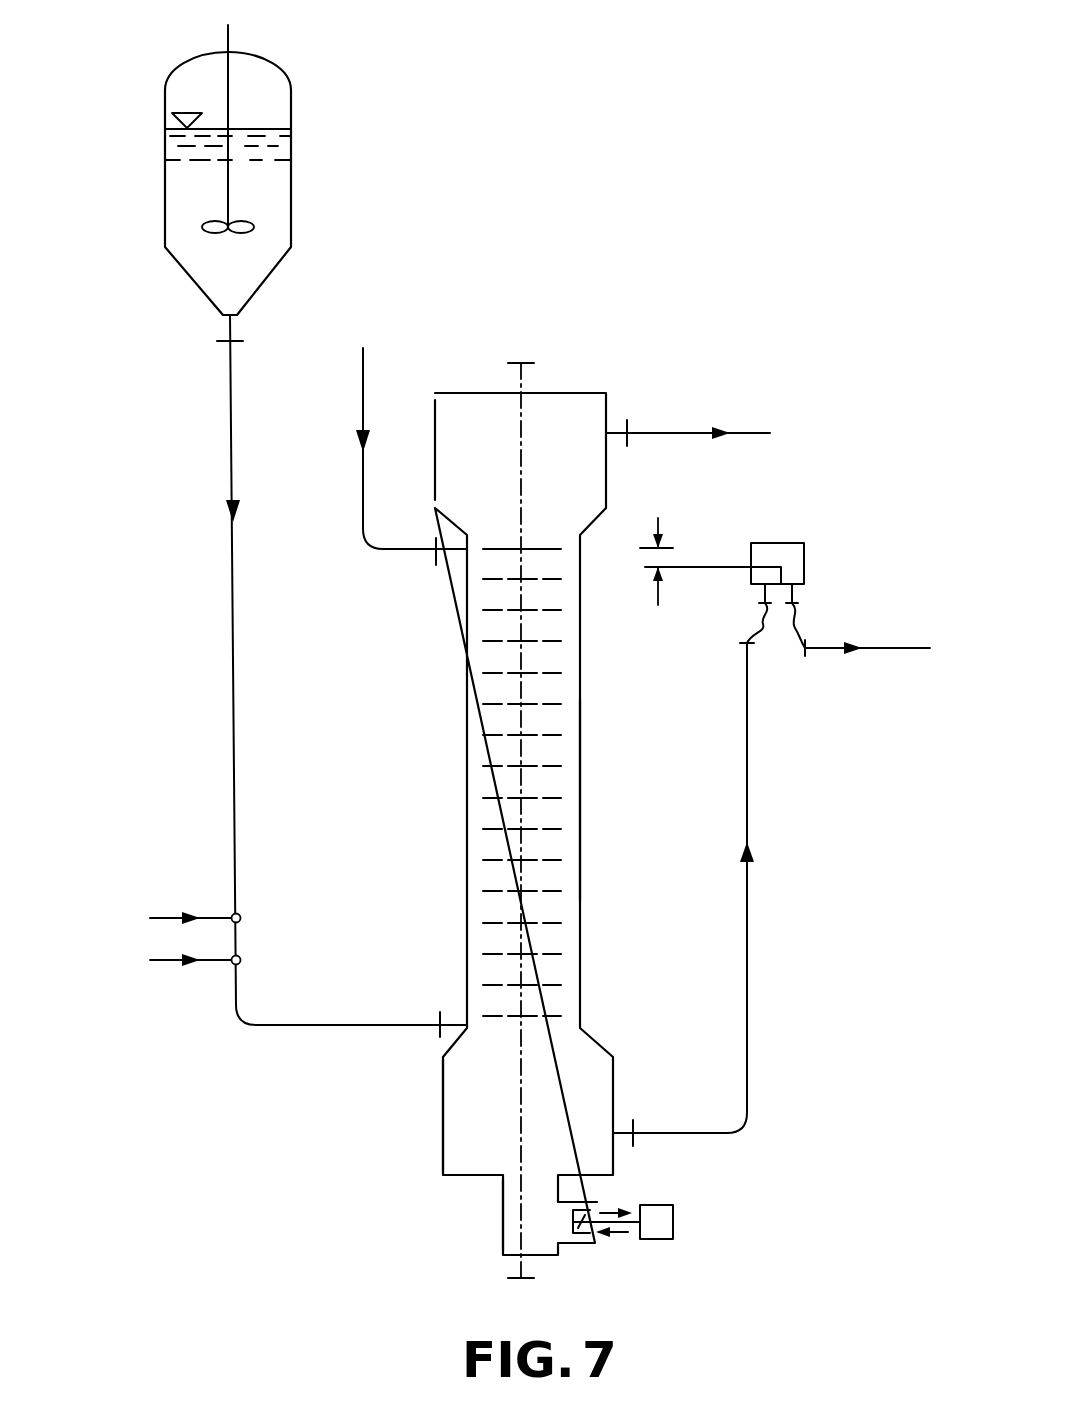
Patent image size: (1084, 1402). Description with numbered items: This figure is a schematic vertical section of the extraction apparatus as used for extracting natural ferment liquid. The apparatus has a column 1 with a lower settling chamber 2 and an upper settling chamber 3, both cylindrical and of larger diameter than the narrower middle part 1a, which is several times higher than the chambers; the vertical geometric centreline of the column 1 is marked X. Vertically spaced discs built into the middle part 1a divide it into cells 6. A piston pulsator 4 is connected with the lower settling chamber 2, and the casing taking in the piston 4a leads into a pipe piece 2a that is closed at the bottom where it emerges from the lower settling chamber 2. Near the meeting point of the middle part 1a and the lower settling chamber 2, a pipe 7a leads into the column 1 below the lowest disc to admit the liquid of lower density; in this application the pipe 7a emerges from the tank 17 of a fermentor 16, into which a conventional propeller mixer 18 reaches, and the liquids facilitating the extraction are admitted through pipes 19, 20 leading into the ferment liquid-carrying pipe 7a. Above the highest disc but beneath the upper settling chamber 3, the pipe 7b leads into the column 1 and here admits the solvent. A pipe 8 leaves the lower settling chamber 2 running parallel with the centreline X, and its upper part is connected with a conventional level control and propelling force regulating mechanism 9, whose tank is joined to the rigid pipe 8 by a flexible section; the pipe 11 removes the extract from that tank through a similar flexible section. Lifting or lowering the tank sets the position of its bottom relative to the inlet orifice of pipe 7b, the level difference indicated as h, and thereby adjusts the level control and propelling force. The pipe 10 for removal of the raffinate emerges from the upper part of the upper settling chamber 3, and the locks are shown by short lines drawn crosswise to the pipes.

The column 1 is at (582, 768).
The middle part 1a is at (582, 838).
The lower settling chamber 2 is at (443, 1148).
The pipe piece 2a is at (512, 1227).
The upper settling chamber 3 is at (435, 472).
The piston pulsator 4 is at (665, 1217).
The piston 4a is at (587, 1242).
The cells 6 is at (560, 940).
The pipe 7a is at (405, 1023).
The pipe 7b is at (428, 555).
The pipe 8 is at (748, 804).
The level control and propelling force regulating mechanism 9 is at (805, 580).
The pipe 10 is at (614, 430).
The pipe 11 is at (828, 650).
The fermentor 16 is at (161, 170).
The tank 17 is at (185, 209).
The propeller mixer 18 is at (226, 70).
The pipe 19 is at (215, 964).
The pipe 20 is at (212, 912).
The liquid level difference h is at (657, 560).
The vertical geometric centreline X is at (520, 392).